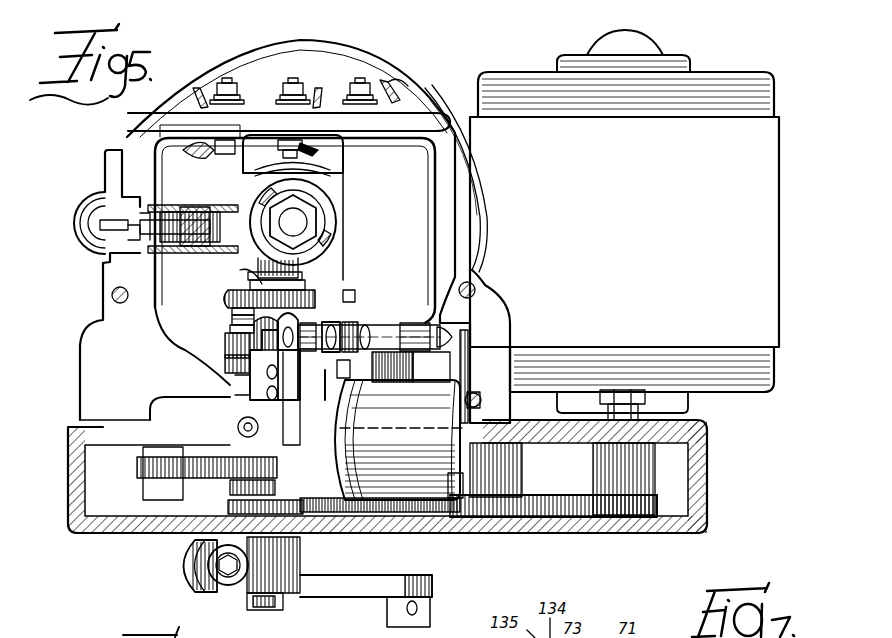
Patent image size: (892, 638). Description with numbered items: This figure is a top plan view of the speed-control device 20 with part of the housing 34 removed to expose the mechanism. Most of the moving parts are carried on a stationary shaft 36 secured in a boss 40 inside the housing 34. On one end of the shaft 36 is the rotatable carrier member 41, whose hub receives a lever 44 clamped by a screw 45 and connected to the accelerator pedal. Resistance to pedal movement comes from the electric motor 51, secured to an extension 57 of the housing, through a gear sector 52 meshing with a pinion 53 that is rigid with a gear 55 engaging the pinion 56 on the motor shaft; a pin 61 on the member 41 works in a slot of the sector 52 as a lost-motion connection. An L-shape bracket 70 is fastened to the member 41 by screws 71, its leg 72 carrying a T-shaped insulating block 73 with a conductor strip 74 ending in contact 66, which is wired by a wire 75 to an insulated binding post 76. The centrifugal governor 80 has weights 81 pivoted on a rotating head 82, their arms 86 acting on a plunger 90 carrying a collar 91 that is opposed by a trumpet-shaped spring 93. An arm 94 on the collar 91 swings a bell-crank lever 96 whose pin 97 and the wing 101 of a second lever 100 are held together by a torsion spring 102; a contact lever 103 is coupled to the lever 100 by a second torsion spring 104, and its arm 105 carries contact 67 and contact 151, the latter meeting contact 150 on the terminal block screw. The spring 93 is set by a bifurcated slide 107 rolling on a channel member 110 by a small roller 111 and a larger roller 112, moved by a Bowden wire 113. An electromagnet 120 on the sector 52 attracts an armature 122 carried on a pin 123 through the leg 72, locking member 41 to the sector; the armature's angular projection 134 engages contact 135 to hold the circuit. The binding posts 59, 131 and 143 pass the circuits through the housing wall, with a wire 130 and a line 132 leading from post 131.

The device 20 is at (712, 486).
The housing 34 is at (398, 115).
The stationary shaft 36 is at (270, 611).
The boss 40 is at (250, 400).
The rotatable carrier member 41 is at (140, 470).
The lever 44 is at (375, 590).
The screw 45 is at (230, 578).
The electric motor 51 is at (698, 130).
The gear sector 52 is at (455, 500).
The pinion 53 is at (522, 480).
The gear 55 is at (546, 517).
The pinion 56 is at (655, 495).
The extension of the housing 57 is at (598, 525).
The insulated binding post 59 is at (362, 83).
The pin 61 is at (160, 500).
The contact 66 is at (315, 317).
The contact 67 is at (312, 317).
The L-shape bracket 70 is at (260, 470).
The screws 71 is at (252, 500).
The leg of the bracket 72 is at (363, 423).
The T-shaped block 73 is at (235, 388).
The conductor strip 74 is at (343, 387).
The wire 75 is at (500, 418).
The insulated binding post 76 is at (478, 372).
The centrifugal governor 80 is at (352, 173).
The centrifugal weights 81 is at (262, 133).
The rotating head 82 is at (240, 160).
The inwardly extending arms 86 is at (402, 617).
The plunger 90 is at (300, 218).
The collar 91 is at (325, 235).
The trumpet-shaped spring 93 is at (318, 222).
The arm 94 is at (268, 274).
The bell-crank lever 96 is at (232, 288).
The pin 97 is at (232, 311).
The second lever 100 is at (224, 298).
The wing 101 is at (262, 284).
The torsion spring 102 is at (232, 320).
The contact lever 103 is at (226, 346).
The second torsion spring 104 is at (230, 330).
The arm 105 is at (190, 378).
The bifurcated slide 107 is at (155, 145).
The channel member 110 is at (190, 252).
The small roller 111 is at (215, 205).
The larger roller 112 is at (130, 250).
The Bowden wire 113 is at (108, 218).
The electromagnet 120 is at (405, 500).
The armature 122 is at (358, 500).
The pin 123 is at (238, 430).
The wire 130 is at (190, 150).
The insulated binding post 131 is at (250, 90).
The line 132 is at (202, 88).
The angular projection 134 is at (380, 383).
The contact 135 is at (405, 372).
The insulated binding post 143 is at (293, 83).
The contact 150 is at (362, 325).
The contact 151 is at (350, 322).